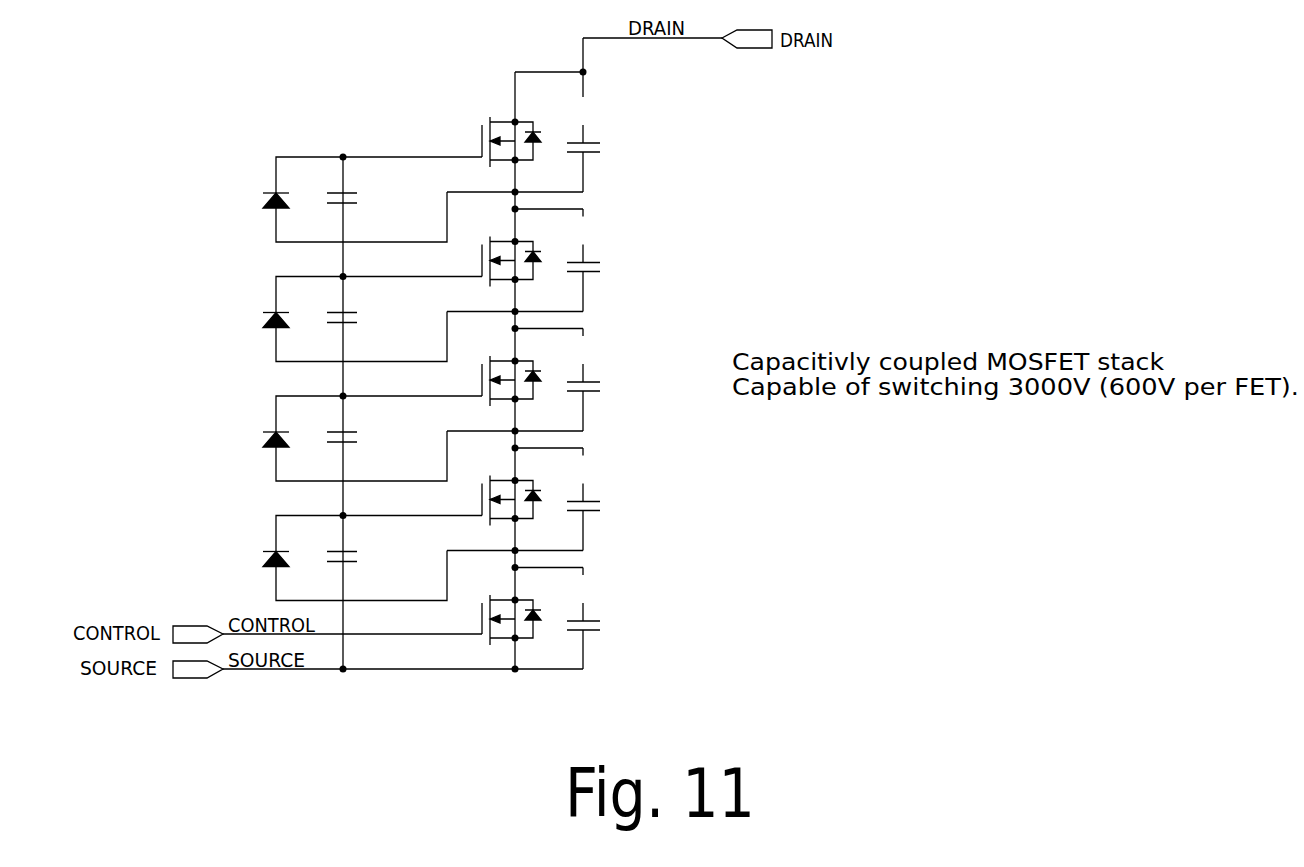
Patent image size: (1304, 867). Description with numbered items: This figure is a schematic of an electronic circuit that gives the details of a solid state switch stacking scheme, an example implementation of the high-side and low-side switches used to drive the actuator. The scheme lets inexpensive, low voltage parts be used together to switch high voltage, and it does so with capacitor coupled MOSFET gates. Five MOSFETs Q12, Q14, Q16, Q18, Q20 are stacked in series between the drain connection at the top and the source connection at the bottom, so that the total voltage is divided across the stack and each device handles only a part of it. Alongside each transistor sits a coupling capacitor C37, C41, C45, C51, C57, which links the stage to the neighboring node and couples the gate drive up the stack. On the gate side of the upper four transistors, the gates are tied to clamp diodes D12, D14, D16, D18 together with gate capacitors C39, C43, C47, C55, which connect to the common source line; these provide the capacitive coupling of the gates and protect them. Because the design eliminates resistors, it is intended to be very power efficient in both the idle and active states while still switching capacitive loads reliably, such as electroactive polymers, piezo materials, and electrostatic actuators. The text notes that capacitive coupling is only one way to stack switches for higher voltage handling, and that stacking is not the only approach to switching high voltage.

The MOSFET (SM/SOT23_123) Q12 is at (569, 133).
The MOSFET (SM/SOT23_123) Q14 is at (569, 253).
The MOSFET (SM/SOT23_123) Q16 is at (569, 372).
The MOSFET (SM/SOT23_123) Q18 is at (569, 492).
The MOSFET (SM/SOT23_123) Q20 is at (569, 611).
The coupling capacitor 100p C37 is at (637, 160).
The coupling capacitor 100p C41 is at (637, 280).
The coupling capacitor 100p C45 is at (637, 399).
The coupling capacitor 100p C51 is at (637, 519).
The coupling capacitor 100p C57 is at (637, 638).
The gate clamp diode D12 is at (335, 183).
The gate clamp diode D14 is at (335, 303).
The gate clamp diode D16 is at (335, 422).
The gate clamp diode D18 is at (335, 542).
The gate capacitor 10p C39 is at (387, 212).
The gate capacitor 22p C43 is at (387, 332).
The gate capacitor 32p C47 is at (387, 451).
The gate capacitor 44p C55 is at (387, 571).